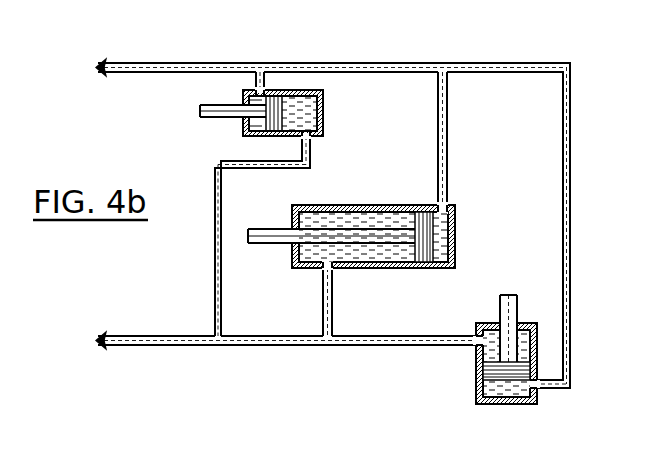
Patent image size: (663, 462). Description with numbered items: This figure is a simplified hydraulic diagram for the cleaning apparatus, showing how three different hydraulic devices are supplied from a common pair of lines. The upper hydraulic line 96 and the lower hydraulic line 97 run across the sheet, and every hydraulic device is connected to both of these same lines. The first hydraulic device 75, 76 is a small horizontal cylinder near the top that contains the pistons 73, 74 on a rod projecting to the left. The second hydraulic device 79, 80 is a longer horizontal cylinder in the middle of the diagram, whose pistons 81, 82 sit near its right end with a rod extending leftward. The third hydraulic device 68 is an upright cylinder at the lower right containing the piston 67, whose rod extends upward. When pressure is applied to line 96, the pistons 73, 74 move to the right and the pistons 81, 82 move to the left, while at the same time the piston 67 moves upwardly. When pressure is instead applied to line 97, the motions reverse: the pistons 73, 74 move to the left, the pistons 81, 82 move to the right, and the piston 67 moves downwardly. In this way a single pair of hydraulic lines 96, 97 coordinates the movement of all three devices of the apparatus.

The hydraulic line 96 is at (154, 62).
The hydraulic line 97 is at (157, 347).
The piston 73 is at (260, 79).
The piston 74 is at (275, 92).
The hydraulic device 75 is at (299, 83).
The hydraulic device 76 is at (299, 83).
The hydraulic device 79 is at (389, 219).
The hydraulic device 80 is at (389, 219).
The piston 81 is at (389, 237).
The piston 82 is at (455, 233).
The piston 67 is at (483, 369).
The hydraulic device 68 is at (483, 388).